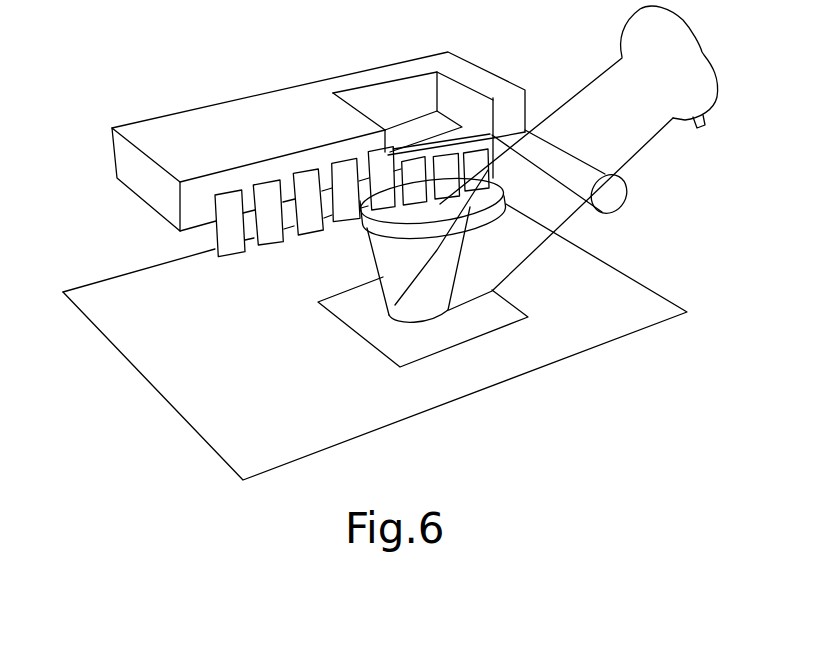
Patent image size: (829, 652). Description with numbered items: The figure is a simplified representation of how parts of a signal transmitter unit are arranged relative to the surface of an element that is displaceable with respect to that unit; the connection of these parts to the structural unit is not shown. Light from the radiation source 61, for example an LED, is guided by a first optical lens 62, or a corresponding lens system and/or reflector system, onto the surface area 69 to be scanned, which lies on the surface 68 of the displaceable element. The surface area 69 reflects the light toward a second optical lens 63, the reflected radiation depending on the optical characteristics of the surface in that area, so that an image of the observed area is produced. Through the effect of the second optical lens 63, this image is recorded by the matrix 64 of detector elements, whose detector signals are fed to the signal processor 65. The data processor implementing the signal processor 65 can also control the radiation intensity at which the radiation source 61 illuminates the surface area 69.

The radiation source 61 is at (703, 53).
The first optical lens 62 is at (608, 173).
The second optical lens 63 is at (488, 170).
The matrix of detector elements 64 is at (418, 128).
The signal processor 65 is at (190, 112).
The surface 68 is at (653, 292).
The surface area to be scanned 69 is at (452, 350).